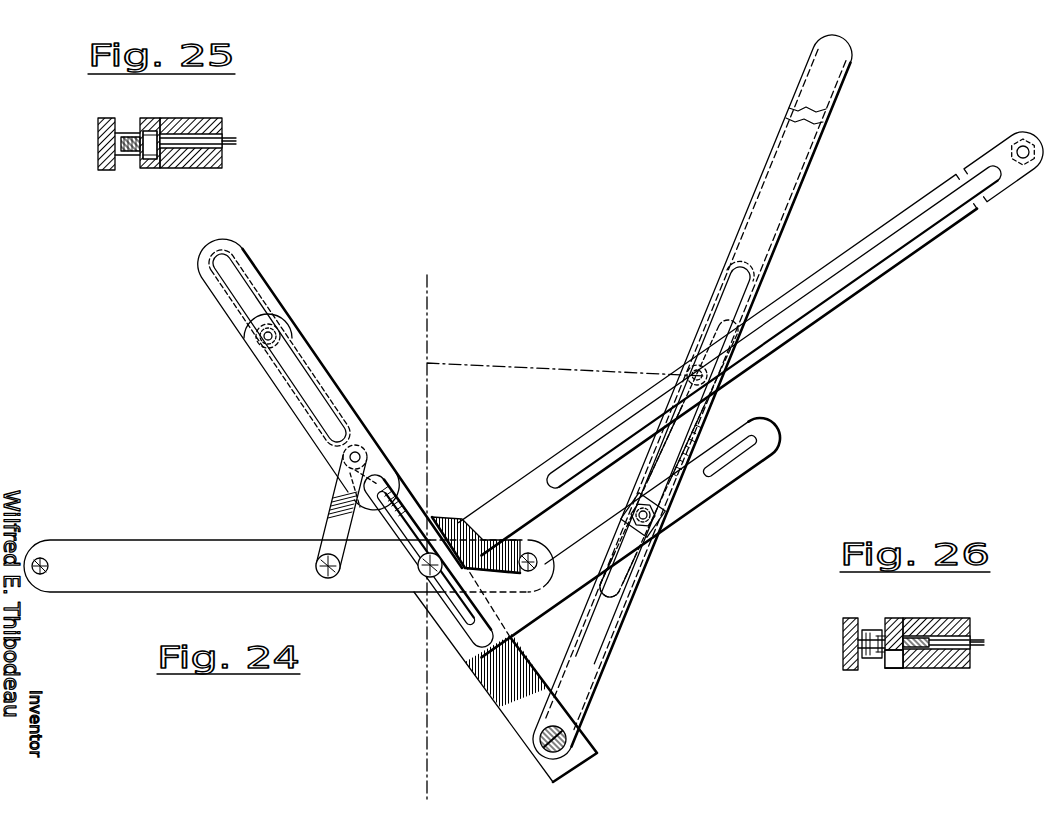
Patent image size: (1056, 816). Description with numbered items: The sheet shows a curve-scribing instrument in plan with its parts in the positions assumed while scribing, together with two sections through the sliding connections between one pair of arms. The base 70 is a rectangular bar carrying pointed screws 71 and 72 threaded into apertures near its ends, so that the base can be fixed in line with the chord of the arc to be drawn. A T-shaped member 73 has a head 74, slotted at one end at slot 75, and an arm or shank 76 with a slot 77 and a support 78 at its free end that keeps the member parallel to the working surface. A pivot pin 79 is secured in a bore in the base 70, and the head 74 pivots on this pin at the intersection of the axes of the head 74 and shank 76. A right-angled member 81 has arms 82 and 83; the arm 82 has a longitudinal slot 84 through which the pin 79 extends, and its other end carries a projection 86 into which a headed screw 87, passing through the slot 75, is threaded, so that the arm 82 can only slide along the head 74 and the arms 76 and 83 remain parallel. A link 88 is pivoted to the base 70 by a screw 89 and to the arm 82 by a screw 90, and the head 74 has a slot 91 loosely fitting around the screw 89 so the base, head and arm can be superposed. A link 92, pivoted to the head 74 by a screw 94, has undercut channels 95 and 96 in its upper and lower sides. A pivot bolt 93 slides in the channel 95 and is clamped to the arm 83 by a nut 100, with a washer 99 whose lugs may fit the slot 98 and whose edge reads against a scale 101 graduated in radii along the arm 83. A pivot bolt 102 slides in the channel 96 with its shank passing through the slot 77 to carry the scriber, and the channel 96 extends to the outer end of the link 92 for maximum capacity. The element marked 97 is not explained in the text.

In FIG. 24, the base 70 is at (110, 591).
In FIG. 25, the base 70 is at (222, 160).
In FIG. 26, the base 70 is at (970, 618).
In FIG. 24, the pointed screw 71 is at (48, 566).
In FIG. 25, the pointed screw 71 is at (222, 126).
In FIG. 26, the pointed screw 71 is at (984, 641).
In FIG. 24, the pointed screw 72 is at (533, 560).
In FIG. 24, the T-shaped member 73 is at (448, 513).
In FIG. 24, the head 74 is at (505, 690).
In FIG. 25, the head 74 is at (147, 118).
In FIG. 26, the head 74 is at (894, 618).
In FIG. 24, the slot 75 is at (240, 304).
In FIG. 25, the slot 75 is at (150, 168).
In FIG. 24, the arm or shank 76 is at (845, 298).
In FIG. 24, the slot 77 is at (893, 219).
In FIG. 24, the support 78 is at (1010, 145).
In FIG. 24, the pivot pin 79 is at (425, 577).
In FIG. 24, the right-angled member 81 is at (478, 645).
In FIG. 24, the arm 82 is at (290, 400).
In FIG. 25, the arm 82 is at (98, 132).
In FIG. 26, the arm 82 is at (843, 625).
In FIG. 24, the arm 83 is at (775, 445).
In FIG. 24, the longitudinal slot 84 is at (400, 497).
In FIG. 26, the longitudinal slot 84 is at (843, 645).
In FIG. 25, the projection 86 is at (130, 134).
In FIG. 26, the projection 86 is at (872, 660).
In FIG. 24, the headed screw 87 is at (262, 340).
In FIG. 25, the headed screw 87 is at (158, 132).
In FIG. 24, the link 88 is at (333, 500).
In FIG. 26, the link 88 is at (878, 636).
In FIG. 24, the screw 89 is at (322, 566).
In FIG. 26, the screw 89 is at (922, 638).
In FIG. 24, the screw 90 is at (350, 458).
In FIG. 24, the slot 91 is at (385, 468).
In FIG. 26, the slot 91 is at (895, 668).
In FIG. 24, the link 92 is at (768, 163).
In FIG. 24, the pivot bolt 93 is at (655, 528).
In FIG. 24, the screw 94 is at (566, 740).
In FIG. 24, the channel 95 is at (705, 420).
In FIG. 24, the channel 96 is at (780, 222).
In FIG. 24, the rounded end 97 is at (625, 590).
In FIG. 24, the slot 98 is at (727, 467).
In FIG. 24, the washer 99 is at (625, 515).
In FIG. 24, the nut 100 is at (638, 507).
In FIG. 24, the scale 101 is at (748, 424).
In FIG. 24, the pivot bolt 102 is at (695, 368).